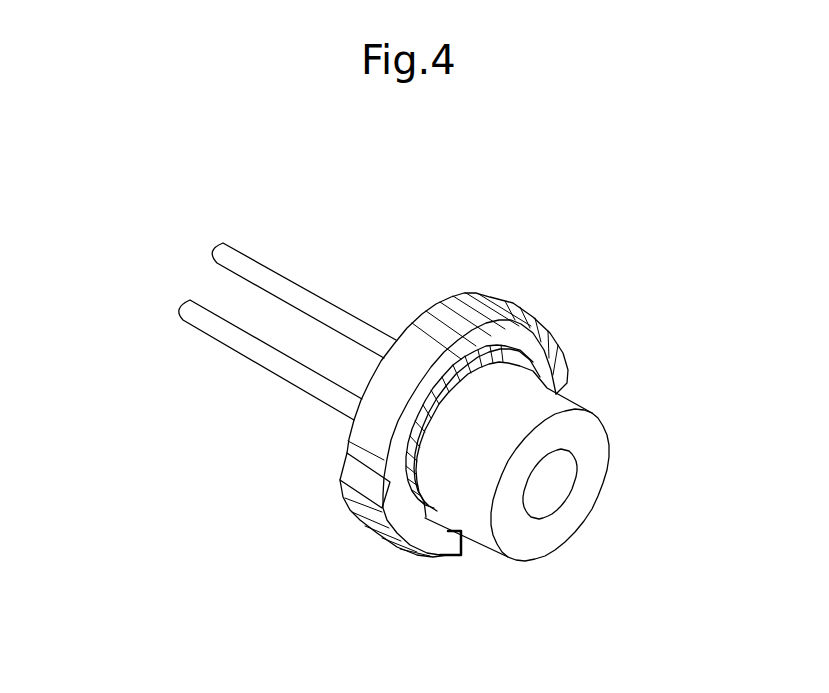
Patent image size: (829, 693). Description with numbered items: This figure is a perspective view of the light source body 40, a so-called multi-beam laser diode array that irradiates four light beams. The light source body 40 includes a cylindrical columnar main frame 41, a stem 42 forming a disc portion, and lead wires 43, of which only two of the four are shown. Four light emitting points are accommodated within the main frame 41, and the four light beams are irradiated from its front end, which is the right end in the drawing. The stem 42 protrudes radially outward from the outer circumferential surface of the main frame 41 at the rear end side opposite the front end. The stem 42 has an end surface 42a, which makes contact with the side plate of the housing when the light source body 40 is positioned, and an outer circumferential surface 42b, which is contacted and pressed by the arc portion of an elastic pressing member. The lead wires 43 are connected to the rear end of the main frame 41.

The light source body 40 is at (600, 245).
The main frame 41 is at (603, 425).
The stem 42 is at (457, 296).
The end surface 42a is at (420, 538).
The outer circumferential surface 42b is at (360, 435).
The lead wires 43 is at (221, 246).